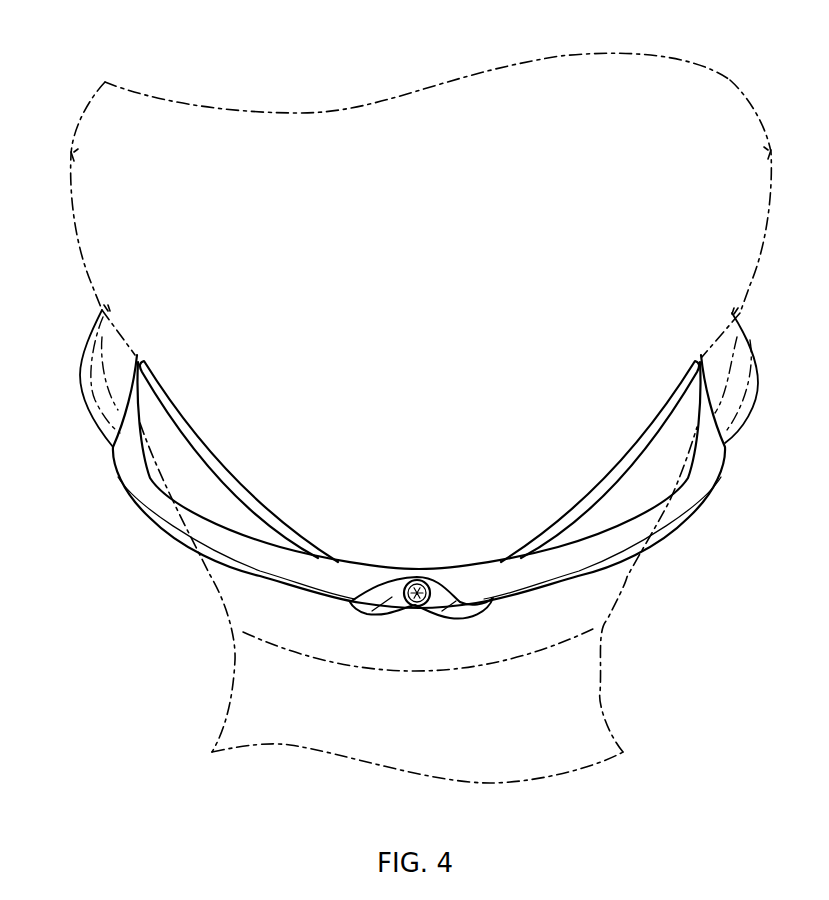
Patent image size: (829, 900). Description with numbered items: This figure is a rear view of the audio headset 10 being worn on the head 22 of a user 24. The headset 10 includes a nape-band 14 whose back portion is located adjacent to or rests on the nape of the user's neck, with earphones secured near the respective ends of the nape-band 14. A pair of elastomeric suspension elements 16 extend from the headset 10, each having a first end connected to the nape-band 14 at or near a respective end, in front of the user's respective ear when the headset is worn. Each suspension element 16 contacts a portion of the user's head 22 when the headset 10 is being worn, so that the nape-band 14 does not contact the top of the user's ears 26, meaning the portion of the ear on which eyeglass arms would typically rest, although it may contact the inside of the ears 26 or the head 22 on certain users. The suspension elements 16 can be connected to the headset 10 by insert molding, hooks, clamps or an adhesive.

The audio headset 10 is at (423, 530).
The nape-band 14 is at (683, 533).
The elastomeric suspension element 16 is at (206, 449).
The head 22 is at (100, 199).
The user 24 is at (257, 82).
The ear 26 is at (113, 358).